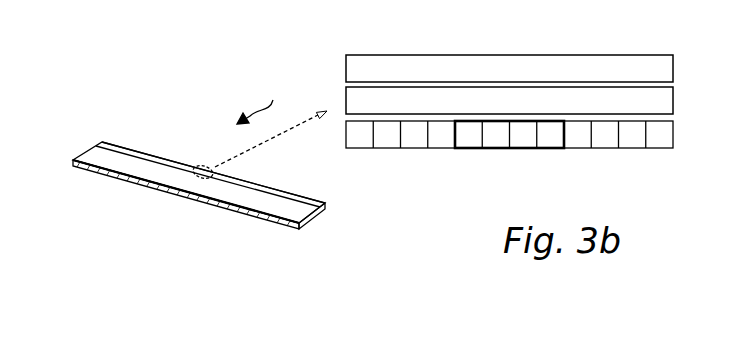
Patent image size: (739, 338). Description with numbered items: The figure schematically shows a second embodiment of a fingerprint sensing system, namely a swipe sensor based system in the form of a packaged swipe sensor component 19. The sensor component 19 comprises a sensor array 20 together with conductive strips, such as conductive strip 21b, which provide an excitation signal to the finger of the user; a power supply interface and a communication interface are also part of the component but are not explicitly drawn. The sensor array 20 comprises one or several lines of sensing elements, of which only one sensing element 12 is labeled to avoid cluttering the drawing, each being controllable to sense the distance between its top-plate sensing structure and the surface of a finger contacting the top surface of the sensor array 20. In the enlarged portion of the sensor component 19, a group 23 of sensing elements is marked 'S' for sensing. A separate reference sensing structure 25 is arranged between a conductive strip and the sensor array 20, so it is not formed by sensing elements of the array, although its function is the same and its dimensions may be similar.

The sensor array 20 is at (115, 160).
The conductive strip 21b is at (145, 180).
The packaged swipe sensor component 19 is at (266, 100).
The reference sensing structure 25 is at (403, 100).
The sensing element 12 is at (458, 148).
The group of sensing elements 23 is at (491, 160).